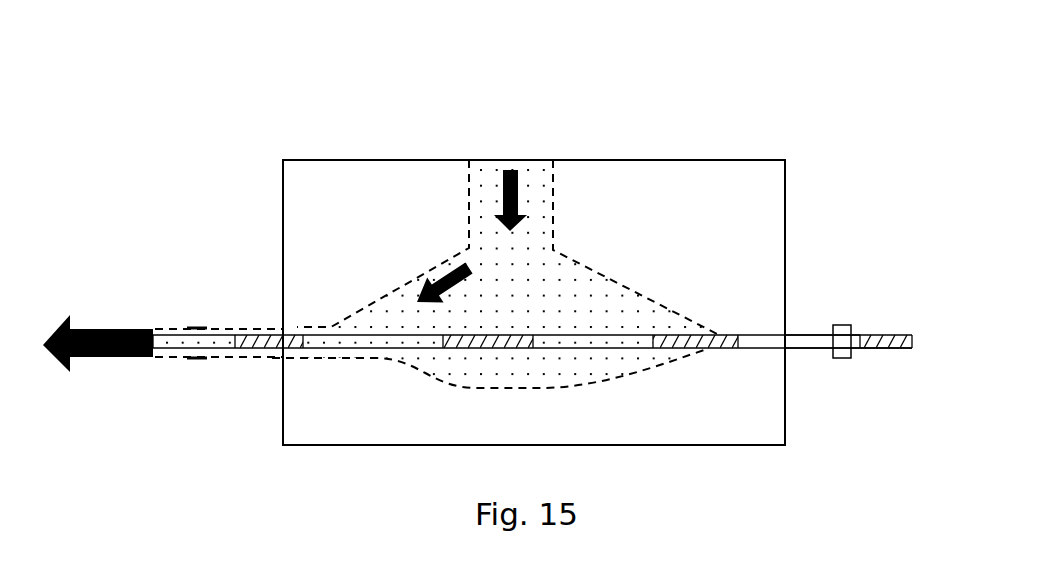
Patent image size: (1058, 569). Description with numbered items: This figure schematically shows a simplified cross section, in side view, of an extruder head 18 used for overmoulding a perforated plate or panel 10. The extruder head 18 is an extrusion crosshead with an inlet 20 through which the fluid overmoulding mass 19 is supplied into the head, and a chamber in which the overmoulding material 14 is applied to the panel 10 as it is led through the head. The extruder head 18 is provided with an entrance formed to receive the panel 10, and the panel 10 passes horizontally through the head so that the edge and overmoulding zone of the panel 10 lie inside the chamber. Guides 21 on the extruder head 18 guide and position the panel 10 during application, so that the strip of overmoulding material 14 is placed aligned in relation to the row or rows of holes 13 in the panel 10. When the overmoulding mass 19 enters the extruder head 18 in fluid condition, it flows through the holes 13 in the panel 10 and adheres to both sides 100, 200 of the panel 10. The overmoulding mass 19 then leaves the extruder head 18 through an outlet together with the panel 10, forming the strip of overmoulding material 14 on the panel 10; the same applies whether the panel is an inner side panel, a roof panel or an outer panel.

The panel 10 is at (895, 338).
The holes 13 is at (797, 340).
The overmoulding material 14 is at (196, 395).
The extruder head 18 is at (822, 174).
The overmoulding mass 19 is at (537, 200).
The inlet 20 is at (500, 112).
The guide 21 is at (843, 358).
The side of the panel 100 is at (862, 338).
The side of the panel 200 is at (885, 350).